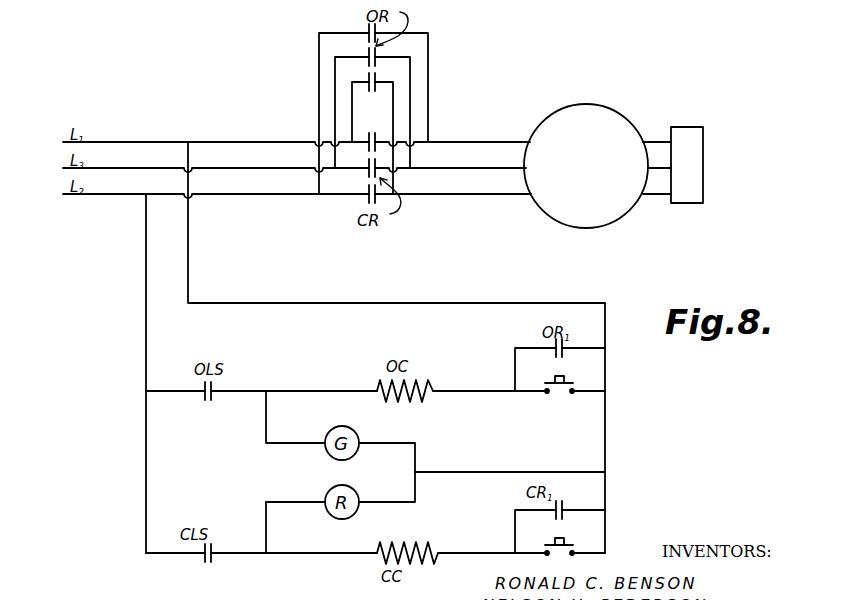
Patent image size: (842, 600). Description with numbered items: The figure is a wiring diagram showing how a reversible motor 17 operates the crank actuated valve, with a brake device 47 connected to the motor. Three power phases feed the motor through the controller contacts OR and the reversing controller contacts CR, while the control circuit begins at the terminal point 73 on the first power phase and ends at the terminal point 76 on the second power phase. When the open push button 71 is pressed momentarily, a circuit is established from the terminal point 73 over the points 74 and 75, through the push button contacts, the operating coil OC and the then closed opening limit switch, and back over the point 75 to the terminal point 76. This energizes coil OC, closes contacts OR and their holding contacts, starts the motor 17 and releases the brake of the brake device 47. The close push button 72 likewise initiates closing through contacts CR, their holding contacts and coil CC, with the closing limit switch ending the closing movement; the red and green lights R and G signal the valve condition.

The motor 17 is at (606, 226).
The brake device 47 is at (704, 169).
The terminal point 73 is at (203, 130).
The terminal point 76 is at (146, 207).
The point 74 is at (606, 348).
The point 75 is at (146, 391).
The open push button 71 is at (556, 394).
The close push button 72 is at (597, 541).